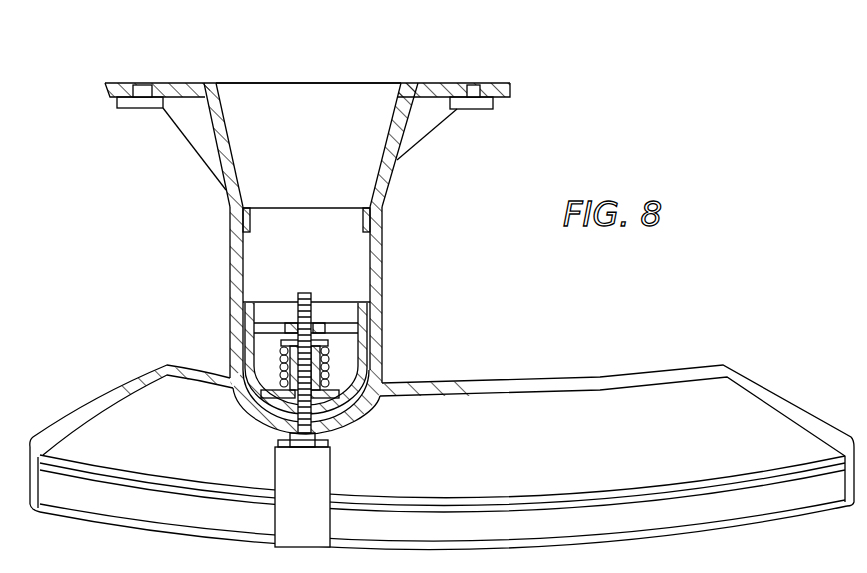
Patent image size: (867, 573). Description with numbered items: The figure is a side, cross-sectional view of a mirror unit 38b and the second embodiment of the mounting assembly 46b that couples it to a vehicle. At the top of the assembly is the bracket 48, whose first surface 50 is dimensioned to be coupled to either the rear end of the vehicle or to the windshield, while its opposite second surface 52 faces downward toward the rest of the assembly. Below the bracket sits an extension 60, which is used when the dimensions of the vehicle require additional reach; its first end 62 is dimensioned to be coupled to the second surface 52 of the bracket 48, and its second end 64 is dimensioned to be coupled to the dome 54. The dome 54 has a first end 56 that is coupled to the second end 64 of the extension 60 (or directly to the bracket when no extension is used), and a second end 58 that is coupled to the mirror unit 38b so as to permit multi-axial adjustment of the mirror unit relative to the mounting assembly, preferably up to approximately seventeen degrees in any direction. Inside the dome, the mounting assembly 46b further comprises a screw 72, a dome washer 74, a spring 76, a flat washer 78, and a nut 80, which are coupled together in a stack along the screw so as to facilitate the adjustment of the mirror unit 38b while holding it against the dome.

The mirror unit 38b is at (507, 462).
The mounting assembly 46b is at (306, 128).
The bracket 48 is at (292, 74).
The first surface 50 is at (384, 82).
The second surface 52 is at (388, 188).
The dome 54 is at (400, 355).
The first end 56 is at (382, 330).
The second end 58 is at (393, 377).
The extension 60 is at (322, 266).
The first end 62 is at (270, 211).
The second end 64 is at (265, 285).
The screw 72 is at (320, 302).
The dome washer 74 is at (358, 405).
The spring 76 is at (238, 368).
The flat washer 78 is at (230, 333).
The nut 80 is at (324, 325).